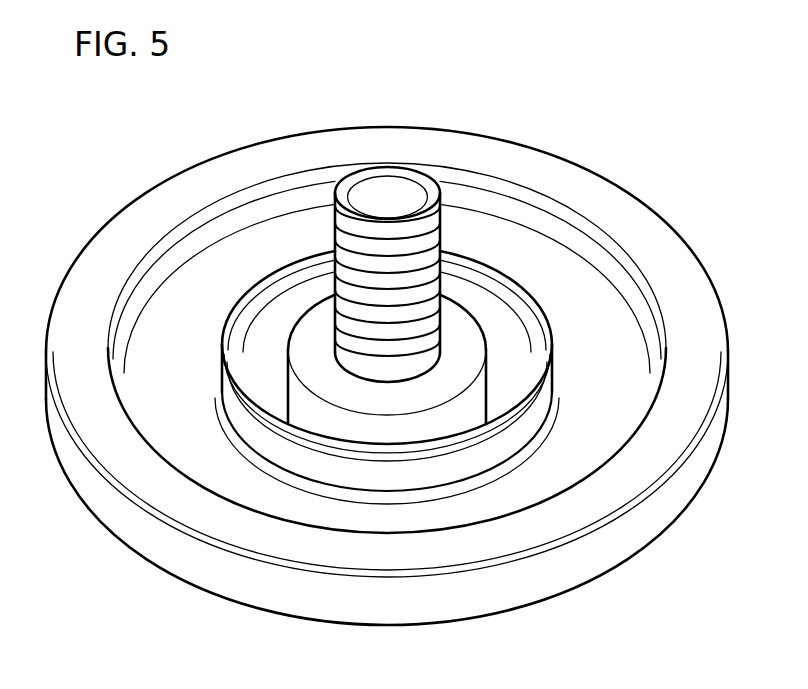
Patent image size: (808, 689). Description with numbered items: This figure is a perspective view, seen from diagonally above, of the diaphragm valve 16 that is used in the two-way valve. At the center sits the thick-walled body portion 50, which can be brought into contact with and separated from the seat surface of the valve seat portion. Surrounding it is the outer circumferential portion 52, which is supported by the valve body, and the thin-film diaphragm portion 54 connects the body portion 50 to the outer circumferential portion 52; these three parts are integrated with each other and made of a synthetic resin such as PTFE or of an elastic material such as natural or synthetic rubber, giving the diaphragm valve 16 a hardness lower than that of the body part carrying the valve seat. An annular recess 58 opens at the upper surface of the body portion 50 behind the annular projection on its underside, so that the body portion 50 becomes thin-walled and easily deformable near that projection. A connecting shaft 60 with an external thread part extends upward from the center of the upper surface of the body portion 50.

The diaphragm valve 16 is at (141, 106).
The body portion 50 is at (531, 416).
The outer circumferential portion 52 is at (697, 360).
The diaphragm portion 54 is at (598, 312).
The annular recess 58 is at (502, 322).
The connecting shaft 60 is at (397, 250).